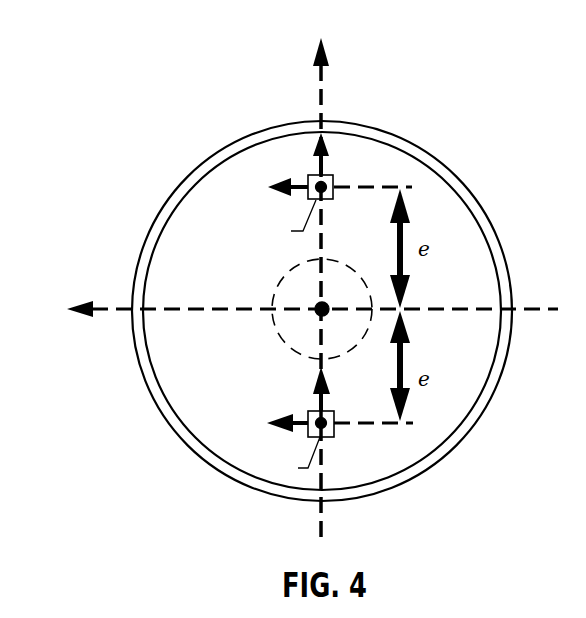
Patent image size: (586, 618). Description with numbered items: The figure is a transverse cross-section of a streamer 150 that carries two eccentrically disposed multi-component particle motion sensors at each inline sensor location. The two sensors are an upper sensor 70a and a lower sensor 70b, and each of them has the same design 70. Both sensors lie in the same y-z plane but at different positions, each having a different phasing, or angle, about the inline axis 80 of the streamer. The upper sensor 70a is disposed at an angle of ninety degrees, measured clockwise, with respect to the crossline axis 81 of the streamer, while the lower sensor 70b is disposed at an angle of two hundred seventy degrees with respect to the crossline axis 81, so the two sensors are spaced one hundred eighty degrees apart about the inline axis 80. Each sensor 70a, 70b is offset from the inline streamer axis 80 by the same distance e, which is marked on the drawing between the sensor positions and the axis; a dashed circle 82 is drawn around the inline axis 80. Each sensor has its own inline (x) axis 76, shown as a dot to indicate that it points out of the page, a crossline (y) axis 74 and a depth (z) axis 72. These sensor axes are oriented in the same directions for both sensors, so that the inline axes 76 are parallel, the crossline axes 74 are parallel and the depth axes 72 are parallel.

The multi-component particle motion sensor 70 is at (360, 293).
The upper sensor 70a is at (360, 160).
The lower sensor 70b is at (352, 457).
The depth (z) axis 72 is at (270, 280).
The crossline (y) axis 74 is at (234, 296).
The inline (x) axis 76 is at (412, 323).
The inline axis 80 is at (214, 236).
The crossline axis 81 is at (290, 297).
The circle 82 is at (233, 352).
The streamer 150 is at (423, 135).